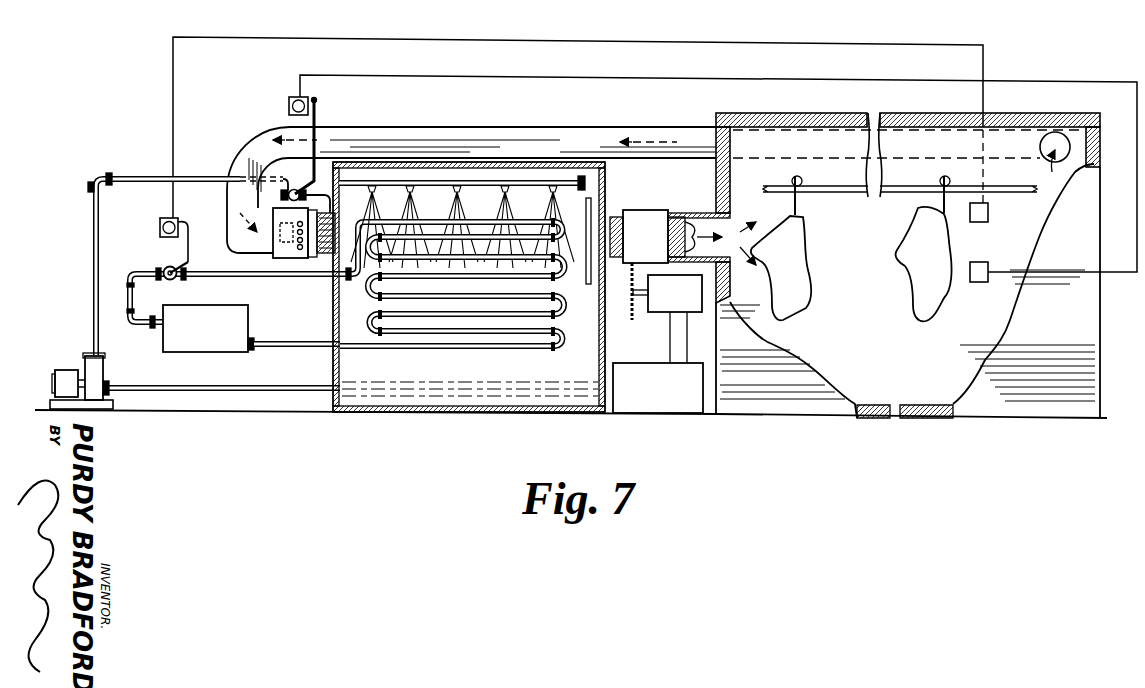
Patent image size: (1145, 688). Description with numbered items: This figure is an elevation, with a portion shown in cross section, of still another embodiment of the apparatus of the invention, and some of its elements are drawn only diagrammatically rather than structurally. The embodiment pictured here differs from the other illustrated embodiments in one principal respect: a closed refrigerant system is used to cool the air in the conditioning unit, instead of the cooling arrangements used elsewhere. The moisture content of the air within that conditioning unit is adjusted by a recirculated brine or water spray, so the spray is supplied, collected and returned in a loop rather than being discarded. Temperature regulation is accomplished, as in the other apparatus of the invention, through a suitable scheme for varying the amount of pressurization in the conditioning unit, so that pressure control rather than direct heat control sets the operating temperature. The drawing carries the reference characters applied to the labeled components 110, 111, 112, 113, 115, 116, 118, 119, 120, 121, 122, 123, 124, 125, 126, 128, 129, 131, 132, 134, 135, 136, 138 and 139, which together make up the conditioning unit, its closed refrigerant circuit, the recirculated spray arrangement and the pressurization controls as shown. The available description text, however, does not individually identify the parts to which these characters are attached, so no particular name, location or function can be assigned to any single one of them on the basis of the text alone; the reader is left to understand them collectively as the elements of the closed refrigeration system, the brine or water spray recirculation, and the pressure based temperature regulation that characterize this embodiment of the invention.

The drying chamber 110 is at (1024, 110).
The fan 111 is at (293, 258).
The return air duct 112 is at (580, 127).
The suction pipe 113 is at (333, 363).
The blower 115 is at (641, 210).
The air supply duct 116 is at (677, 217).
The electric cable 118 is at (631, 302).
The motor 119 is at (655, 314).
The control unit 120 is at (667, 413).
The tank 121 is at (425, 412).
The pump 122 is at (105, 370).
The motor 123 is at (56, 377).
The pipe 124 is at (92, 264).
The spray pipe 125 is at (588, 184).
The heating coil 126 is at (486, 351).
The heater 128 is at (250, 322).
The valve 129 is at (166, 266).
The thermostat 131 is at (988, 211).
The thermostatic control 132 is at (160, 222).
The humidostat 134 is at (977, 283).
The control device 135 is at (289, 103).
The operating rod 136 is at (319, 115).
The valve 138 is at (292, 189).
The duct bend 139 is at (228, 202).